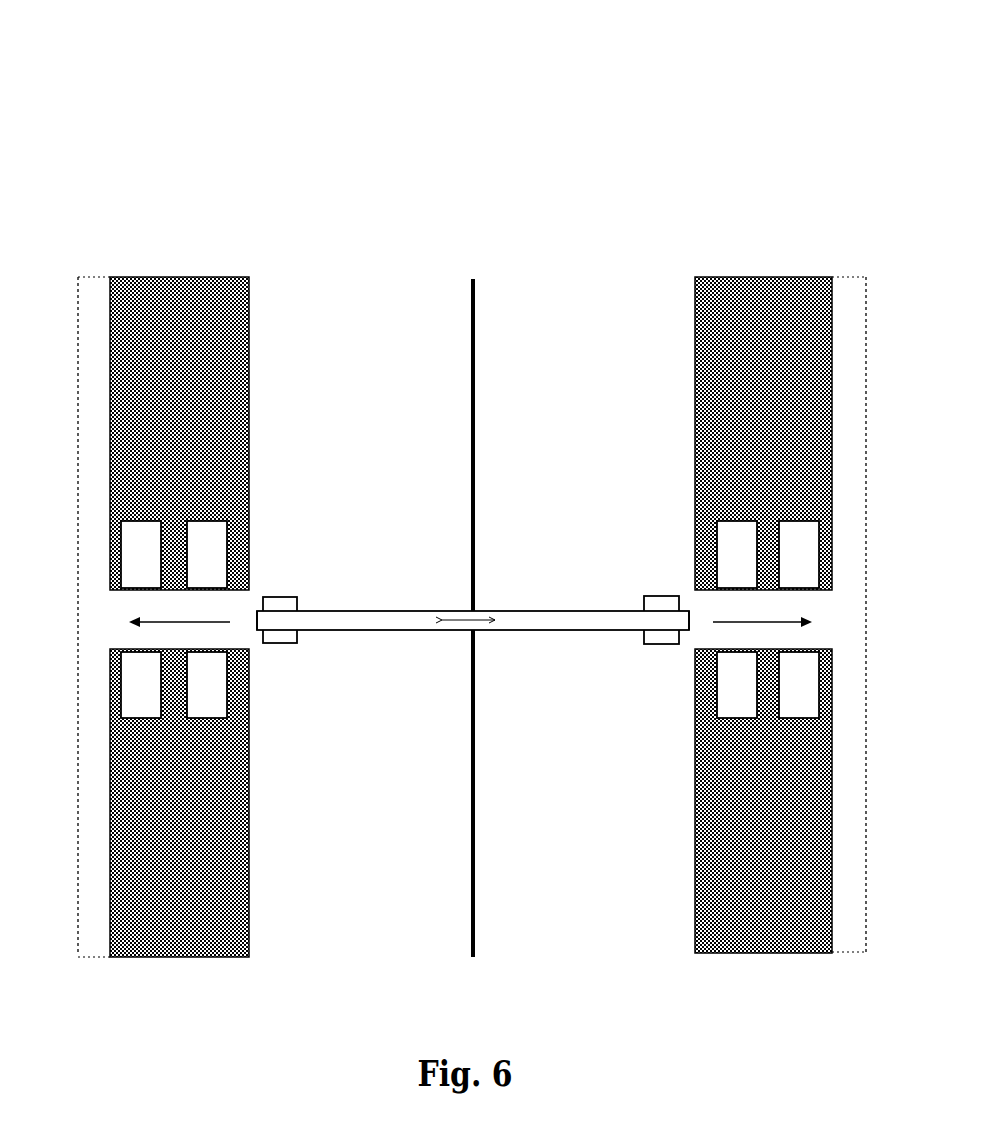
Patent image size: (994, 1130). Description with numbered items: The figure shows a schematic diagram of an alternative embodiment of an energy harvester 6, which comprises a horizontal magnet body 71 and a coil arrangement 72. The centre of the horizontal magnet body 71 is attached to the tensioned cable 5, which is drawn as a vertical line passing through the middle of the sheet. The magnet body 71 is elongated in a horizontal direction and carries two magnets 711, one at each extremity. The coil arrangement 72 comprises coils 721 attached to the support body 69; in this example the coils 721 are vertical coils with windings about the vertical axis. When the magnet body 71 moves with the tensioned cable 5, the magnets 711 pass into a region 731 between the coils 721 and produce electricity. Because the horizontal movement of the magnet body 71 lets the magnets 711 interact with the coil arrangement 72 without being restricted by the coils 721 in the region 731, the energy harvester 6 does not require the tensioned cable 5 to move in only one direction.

The tensioned cable 5 is at (472, 862).
The energy harvester 6 is at (197, 132).
The support body 69 is at (753, 952).
The horizontal magnet body 71 is at (535, 619).
The magnets 711 is at (280, 604).
The coil arrangement 72 is at (127, 609).
The coils 721 is at (778, 701).
The region 731 is at (222, 632).